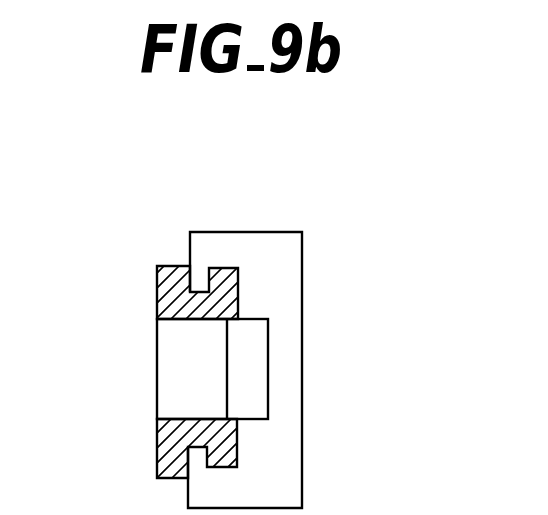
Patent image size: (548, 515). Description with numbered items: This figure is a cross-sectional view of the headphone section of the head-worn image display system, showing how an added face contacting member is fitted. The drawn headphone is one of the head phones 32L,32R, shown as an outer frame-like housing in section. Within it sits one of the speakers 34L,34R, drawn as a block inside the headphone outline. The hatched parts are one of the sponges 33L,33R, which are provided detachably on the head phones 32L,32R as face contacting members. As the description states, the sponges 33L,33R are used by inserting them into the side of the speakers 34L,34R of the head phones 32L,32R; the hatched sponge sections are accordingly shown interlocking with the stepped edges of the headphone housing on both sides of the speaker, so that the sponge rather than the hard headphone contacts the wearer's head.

The head phones 32L,32R is at (302, 252).
The sponges 33L,33R is at (162, 266).
The speakers 34L,34R is at (255, 367).